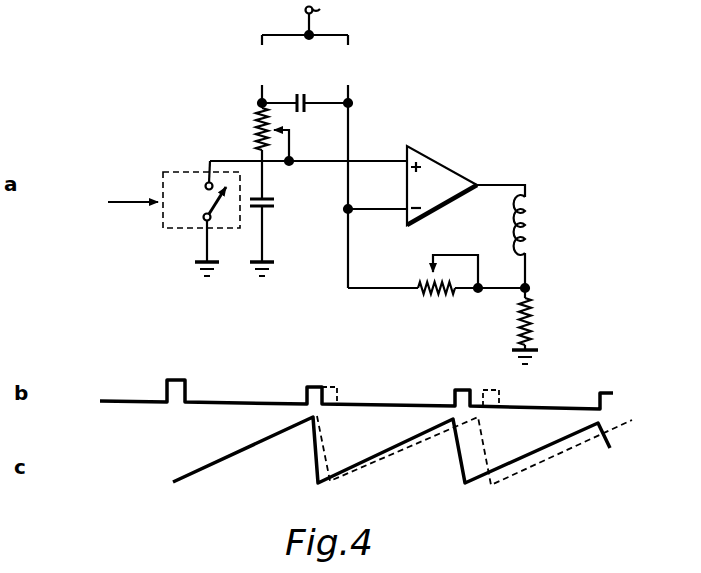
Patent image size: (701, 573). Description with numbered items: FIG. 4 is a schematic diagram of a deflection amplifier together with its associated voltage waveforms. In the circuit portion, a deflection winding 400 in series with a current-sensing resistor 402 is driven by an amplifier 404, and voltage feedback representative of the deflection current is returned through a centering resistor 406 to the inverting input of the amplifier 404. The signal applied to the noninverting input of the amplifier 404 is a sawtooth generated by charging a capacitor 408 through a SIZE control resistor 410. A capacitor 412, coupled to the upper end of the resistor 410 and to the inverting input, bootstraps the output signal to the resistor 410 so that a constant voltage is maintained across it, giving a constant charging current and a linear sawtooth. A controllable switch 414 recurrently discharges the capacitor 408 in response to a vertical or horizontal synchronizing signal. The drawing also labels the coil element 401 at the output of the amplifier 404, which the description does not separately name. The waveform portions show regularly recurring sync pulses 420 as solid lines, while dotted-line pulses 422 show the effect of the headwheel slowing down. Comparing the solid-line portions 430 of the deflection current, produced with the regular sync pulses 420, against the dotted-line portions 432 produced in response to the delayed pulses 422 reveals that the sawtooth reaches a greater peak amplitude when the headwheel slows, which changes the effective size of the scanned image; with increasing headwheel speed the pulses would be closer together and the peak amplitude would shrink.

The deflection winding 400 is at (332, 294).
The deflection coil 401 is at (536, 222).
The current-sensing resistor 402 is at (532, 330).
The amplifier 404 is at (446, 166).
The centering resistor 406 is at (428, 297).
The capacitor 408 is at (276, 201).
The SIZE control resistor 410 is at (256, 122).
The capacitor 412 is at (302, 92).
The controllable switch 414 is at (187, 238).
The sync pulses 420 is at (178, 380).
The dotted-line pulses 422 is at (496, 388).
The solid-line portions 430 is at (311, 453).
The dotted-line portions 432 is at (322, 435).